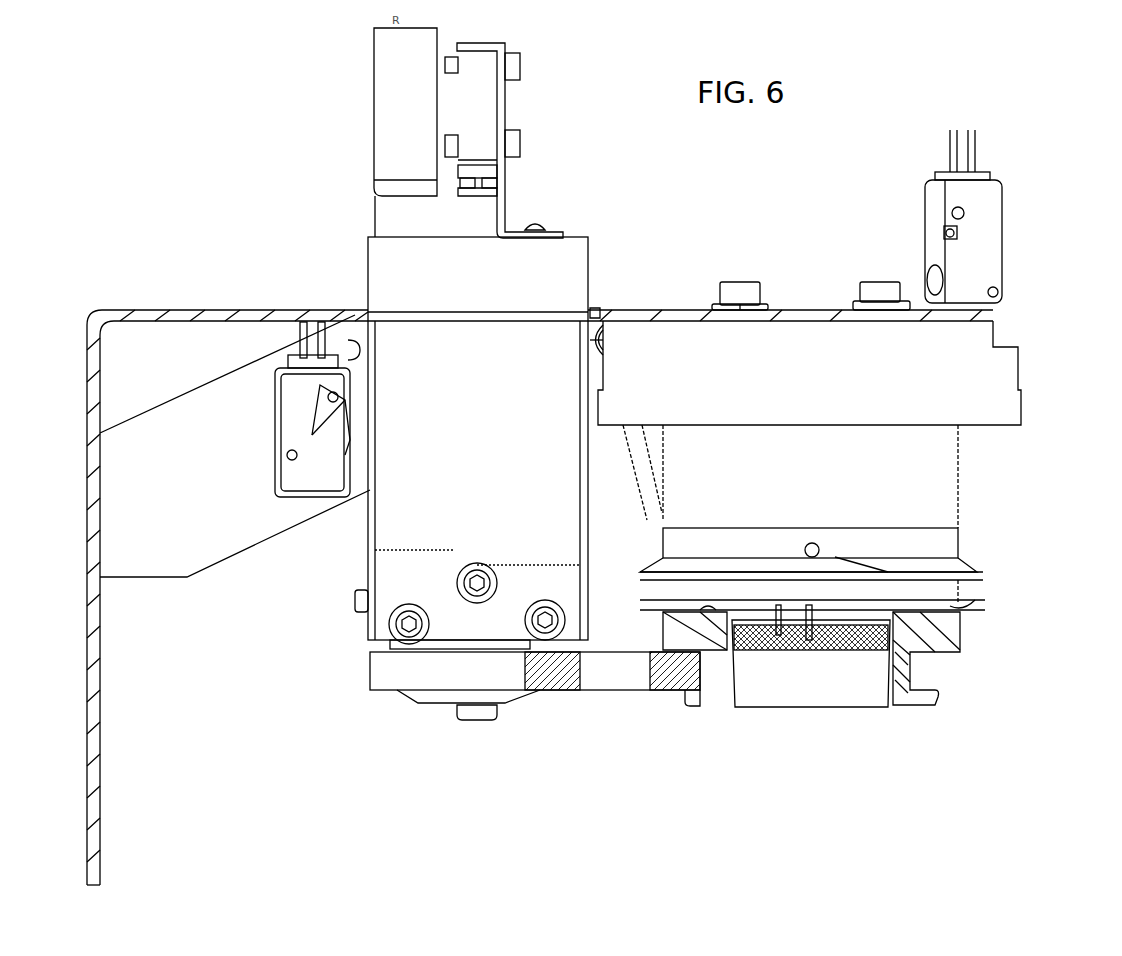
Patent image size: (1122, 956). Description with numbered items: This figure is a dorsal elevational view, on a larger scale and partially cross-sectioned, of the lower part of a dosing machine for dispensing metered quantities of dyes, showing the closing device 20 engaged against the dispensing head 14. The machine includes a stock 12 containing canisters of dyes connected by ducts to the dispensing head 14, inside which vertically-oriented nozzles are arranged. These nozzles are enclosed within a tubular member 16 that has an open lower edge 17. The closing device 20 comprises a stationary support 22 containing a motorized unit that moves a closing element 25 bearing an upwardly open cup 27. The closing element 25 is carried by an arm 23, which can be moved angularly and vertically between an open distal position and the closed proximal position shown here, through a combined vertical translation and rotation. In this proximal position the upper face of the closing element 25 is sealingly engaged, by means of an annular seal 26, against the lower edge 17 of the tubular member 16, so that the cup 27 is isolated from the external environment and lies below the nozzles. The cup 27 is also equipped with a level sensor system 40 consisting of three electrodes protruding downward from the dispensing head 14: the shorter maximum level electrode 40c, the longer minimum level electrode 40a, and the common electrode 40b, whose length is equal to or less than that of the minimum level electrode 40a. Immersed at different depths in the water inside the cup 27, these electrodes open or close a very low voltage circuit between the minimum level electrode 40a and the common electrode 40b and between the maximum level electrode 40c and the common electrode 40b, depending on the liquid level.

The stock 12 is at (913, 708).
The dispensing head 14 is at (988, 458).
The tubular member 16 is at (942, 490).
The lower edge 17 is at (975, 622).
The closing device 20 is at (612, 708).
The stationary support 22 is at (368, 532).
The arm 23 is at (556, 680).
The closing element 25 is at (943, 652).
The annular seal 26 is at (690, 612).
The cup 27 is at (860, 645).
The level sensor system 40 is at (826, 545).
The minimum level electrode 40a is at (812, 640).
The common electrode 40b is at (770, 620).
The maximum level electrode 40c is at (845, 625).